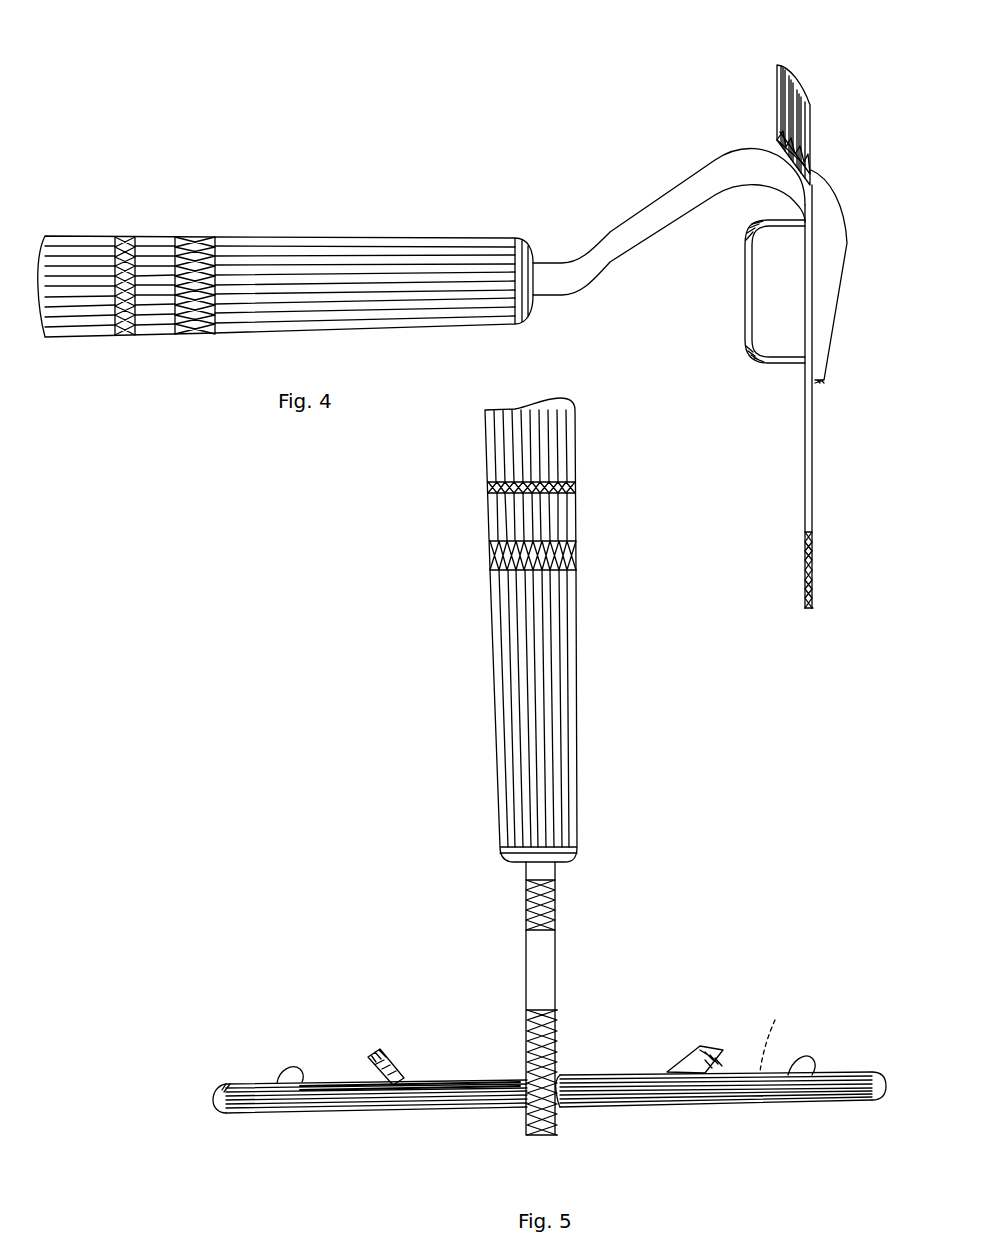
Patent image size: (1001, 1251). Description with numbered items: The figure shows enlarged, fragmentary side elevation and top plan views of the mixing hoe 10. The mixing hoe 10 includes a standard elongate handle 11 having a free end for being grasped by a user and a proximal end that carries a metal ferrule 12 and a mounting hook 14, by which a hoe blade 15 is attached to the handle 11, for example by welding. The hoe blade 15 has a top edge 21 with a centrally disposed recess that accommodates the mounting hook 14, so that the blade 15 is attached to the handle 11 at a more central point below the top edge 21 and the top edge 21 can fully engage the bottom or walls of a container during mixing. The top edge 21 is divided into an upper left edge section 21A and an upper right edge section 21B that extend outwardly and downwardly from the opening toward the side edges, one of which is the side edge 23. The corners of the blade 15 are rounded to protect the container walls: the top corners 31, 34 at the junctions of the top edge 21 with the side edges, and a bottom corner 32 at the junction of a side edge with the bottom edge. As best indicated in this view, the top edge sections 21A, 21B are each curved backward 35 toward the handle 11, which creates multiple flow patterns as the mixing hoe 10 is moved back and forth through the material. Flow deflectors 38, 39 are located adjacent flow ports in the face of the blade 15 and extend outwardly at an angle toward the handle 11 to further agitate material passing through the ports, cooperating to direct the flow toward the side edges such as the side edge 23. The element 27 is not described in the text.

In FIG. 4, the mixing hoe 10 is at (476, 120).
In FIG. 5, the mixing hoe 10 is at (376, 878).
In FIG. 4, the elongate handle 11 is at (78, 236).
In FIG. 5, the elongate handle 11 is at (497, 440).
In FIG. 4, the metal ferrule 12 is at (340, 237).
In FIG. 5, the metal ferrule 12 is at (512, 735).
In FIG. 4, the mounting hook 14 is at (655, 205).
In FIG. 5, the mounting hook 14 is at (528, 965).
In FIG. 4, the hoe blade 15 is at (818, 483).
In FIG. 5, the hoe blade 15 is at (623, 1110).
In FIG. 4, the top edge 21 is at (780, 65).
In FIG. 5, the upper left edge section 21A is at (268, 1115).
In FIG. 5, the upper right edge section 21B is at (803, 1108).
In FIG. 4, the side edge 23 is at (808, 420).
In FIG. 4, the bar end 27 is at (814, 612).
In FIG. 4, the top corner 31 is at (777, 142).
In FIG. 5, the top corner 31 is at (215, 1095).
In FIG. 4, the bottom corner 32 is at (805, 596).
In FIG. 5, the top corner 34 is at (885, 1088).
In FIG. 4, the backward curve 35 is at (800, 112).
In FIG. 5, the backward curve 35 is at (470, 1113).
In FIG. 4, the flow deflector 38 is at (765, 290).
In FIG. 5, the flow deflector 38 is at (395, 1060).
In FIG. 5, the flow deflector 39 is at (695, 1062).